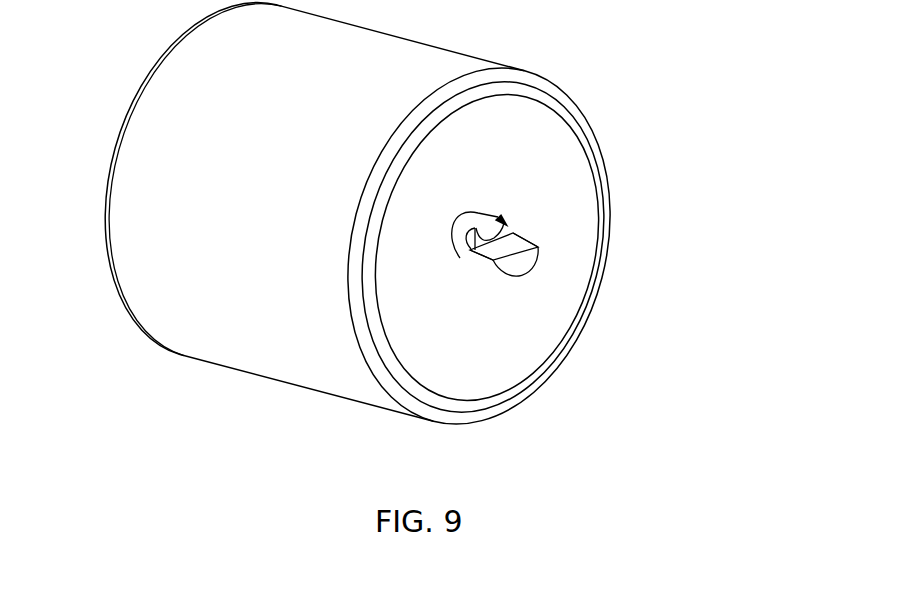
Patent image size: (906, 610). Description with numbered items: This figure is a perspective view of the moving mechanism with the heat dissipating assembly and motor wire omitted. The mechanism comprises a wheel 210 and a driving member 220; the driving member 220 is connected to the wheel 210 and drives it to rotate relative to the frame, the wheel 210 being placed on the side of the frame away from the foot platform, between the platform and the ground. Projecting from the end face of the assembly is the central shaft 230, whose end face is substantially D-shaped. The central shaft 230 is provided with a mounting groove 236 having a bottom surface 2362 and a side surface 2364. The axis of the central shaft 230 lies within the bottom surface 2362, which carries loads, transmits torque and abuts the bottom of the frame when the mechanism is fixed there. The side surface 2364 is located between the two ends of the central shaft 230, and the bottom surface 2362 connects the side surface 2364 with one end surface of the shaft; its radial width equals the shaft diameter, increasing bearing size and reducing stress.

The wheel 210 is at (241, 369).
The driving member 220 is at (497, 370).
The central shaft 230 is at (517, 271).
The mounting groove 236 is at (534, 225).
The bottom surface 2362 is at (510, 244).
The side surface 2364 is at (474, 250).